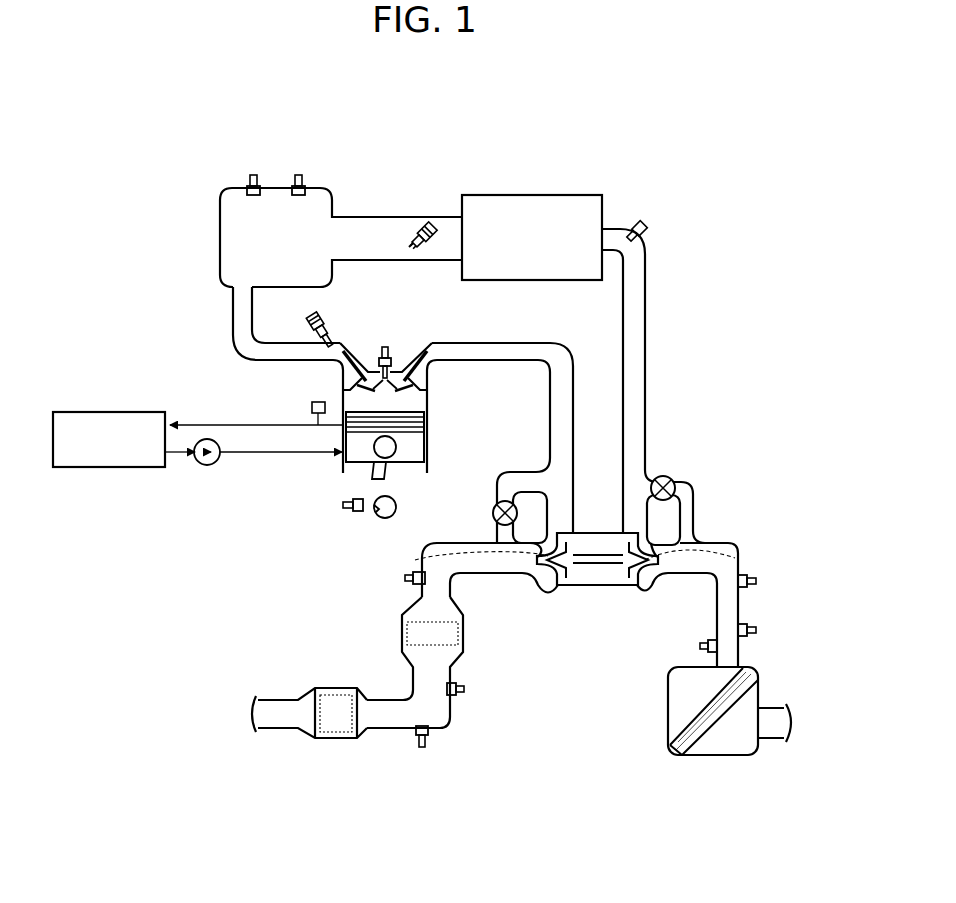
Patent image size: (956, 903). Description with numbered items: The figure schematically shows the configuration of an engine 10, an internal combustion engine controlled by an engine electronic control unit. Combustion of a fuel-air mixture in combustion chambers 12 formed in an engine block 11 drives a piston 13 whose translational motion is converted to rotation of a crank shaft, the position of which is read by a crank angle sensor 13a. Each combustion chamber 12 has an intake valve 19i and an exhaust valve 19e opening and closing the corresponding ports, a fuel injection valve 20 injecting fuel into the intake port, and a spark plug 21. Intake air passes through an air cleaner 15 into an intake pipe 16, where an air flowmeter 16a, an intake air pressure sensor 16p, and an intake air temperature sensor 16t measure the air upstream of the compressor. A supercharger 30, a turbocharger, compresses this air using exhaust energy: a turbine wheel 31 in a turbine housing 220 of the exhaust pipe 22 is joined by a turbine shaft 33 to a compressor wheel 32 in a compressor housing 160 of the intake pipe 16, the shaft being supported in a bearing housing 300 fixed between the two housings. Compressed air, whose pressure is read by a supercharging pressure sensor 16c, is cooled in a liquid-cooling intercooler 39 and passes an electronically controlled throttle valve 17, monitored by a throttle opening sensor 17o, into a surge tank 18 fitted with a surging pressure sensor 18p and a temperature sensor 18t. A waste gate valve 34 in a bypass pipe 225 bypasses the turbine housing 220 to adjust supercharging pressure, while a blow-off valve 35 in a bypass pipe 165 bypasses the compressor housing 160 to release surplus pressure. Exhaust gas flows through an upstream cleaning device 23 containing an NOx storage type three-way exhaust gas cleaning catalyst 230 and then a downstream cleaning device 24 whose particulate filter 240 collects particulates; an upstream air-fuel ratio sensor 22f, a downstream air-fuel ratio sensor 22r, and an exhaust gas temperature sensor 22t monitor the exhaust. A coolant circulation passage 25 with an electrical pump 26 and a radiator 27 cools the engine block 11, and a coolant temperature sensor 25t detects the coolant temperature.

The engine 10 is at (97, 243).
The engine block 11 is at (437, 388).
The combustion chamber 12 is at (392, 400).
The piston 13 is at (426, 447).
The crank angle sensor 13a is at (343, 505).
The air cleaner 15 is at (667, 705).
The intake pipe 16 is at (646, 318).
The air flowmeter 16a is at (700, 646).
The supercharging pressure sensor 16c is at (650, 228).
The intake air pressure sensor 16p is at (757, 581).
The intake air temperature sensor 16t is at (757, 630).
The compressor housing 160 is at (651, 588).
The bypass pipe 165 is at (694, 511).
The throttle valve 17 is at (437, 223).
The throttle opening sensor 17o is at (415, 237).
The surge tank 18 is at (220, 212).
The temperature sensor 18t is at (251, 172).
The surging pressure sensor 18p is at (299, 172).
The intake valve 19i is at (346, 364).
The exhaust valve 19e is at (426, 365).
The fuel injection valve 20 is at (334, 328).
The spark plug 21 is at (391, 355).
The exhaust pipe 22 is at (516, 343).
The upstream air-fuel ratio sensor 22f is at (405, 577).
The downstream air-fuel ratio sensor 22r is at (466, 690).
The exhaust gas temperature sensor 22t is at (430, 742).
The turbine housing 220 is at (548, 593).
The bypass pipe 225 is at (538, 471).
The upstream cleaning device 23 is at (400, 617).
The exhaust gas cleaning catalyst 230 is at (397, 636).
The downstream cleaning device 24 is at (333, 739).
The particulate filter 240 is at (366, 736).
The coolant circulation passage 25 is at (196, 423).
The coolant temperature sensor 25t is at (311, 407).
The electrical pump 26 is at (208, 466).
The radiator 27 is at (87, 412).
The supercharger 30 is at (574, 600).
The bearing housing 300 is at (577, 598).
The turbine wheel 31 is at (421, 556).
The compressor wheel 32 is at (741, 557).
The turbine shaft 33 is at (597, 554).
The waste gate valve 34 is at (493, 513).
The blow-off valve 35 is at (666, 477).
The intercooler 39 is at (602, 198).